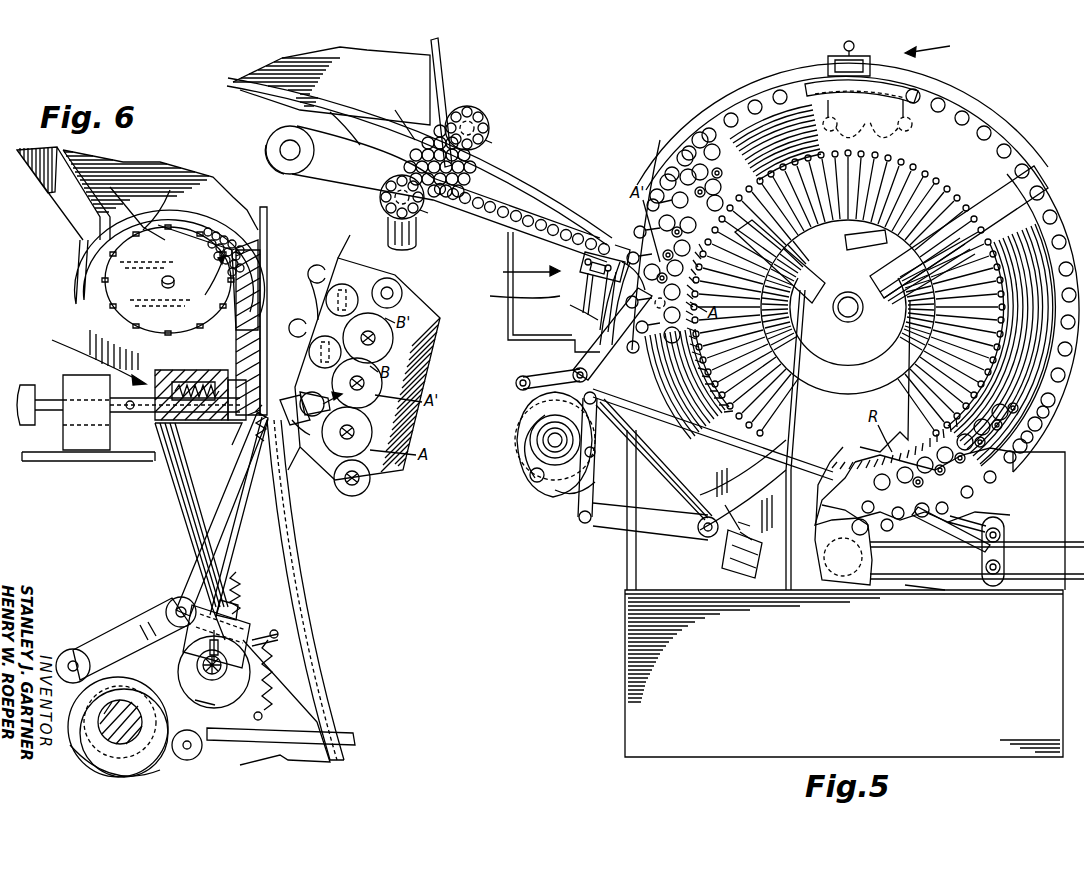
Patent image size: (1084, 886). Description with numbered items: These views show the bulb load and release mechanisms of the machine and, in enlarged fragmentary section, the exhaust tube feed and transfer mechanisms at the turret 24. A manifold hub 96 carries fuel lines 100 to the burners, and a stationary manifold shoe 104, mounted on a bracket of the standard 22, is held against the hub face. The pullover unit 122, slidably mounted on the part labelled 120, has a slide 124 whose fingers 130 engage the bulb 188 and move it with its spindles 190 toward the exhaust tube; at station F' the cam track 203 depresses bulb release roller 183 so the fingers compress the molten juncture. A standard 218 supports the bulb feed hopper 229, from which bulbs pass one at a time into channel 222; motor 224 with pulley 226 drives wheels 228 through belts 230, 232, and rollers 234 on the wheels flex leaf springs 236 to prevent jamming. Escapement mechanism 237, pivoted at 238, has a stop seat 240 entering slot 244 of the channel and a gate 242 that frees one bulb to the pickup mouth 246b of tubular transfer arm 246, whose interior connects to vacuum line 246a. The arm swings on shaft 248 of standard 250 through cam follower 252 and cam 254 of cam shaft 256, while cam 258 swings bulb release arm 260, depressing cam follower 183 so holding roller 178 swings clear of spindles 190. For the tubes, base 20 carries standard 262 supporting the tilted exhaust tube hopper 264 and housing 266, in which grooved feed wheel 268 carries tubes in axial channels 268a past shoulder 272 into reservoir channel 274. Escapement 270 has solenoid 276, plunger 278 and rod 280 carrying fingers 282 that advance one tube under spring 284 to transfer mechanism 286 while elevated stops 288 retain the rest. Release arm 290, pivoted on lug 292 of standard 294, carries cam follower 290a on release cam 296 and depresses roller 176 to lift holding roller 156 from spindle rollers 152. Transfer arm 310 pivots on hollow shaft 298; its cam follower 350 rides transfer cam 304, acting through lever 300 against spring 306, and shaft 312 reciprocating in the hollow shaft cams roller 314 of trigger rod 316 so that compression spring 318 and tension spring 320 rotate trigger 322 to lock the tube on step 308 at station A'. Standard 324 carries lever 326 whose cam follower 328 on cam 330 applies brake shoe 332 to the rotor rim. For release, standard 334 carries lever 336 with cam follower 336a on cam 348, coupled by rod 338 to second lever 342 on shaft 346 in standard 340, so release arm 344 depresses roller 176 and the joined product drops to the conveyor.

In FIG. 5, the base frame 20 is at (898, 665).
In FIG. 5, the turret wheel 22 is at (858, 360).
In FIG. 5, the frame plate 24 is at (758, 475).
In FIG. 5, the wheel shaft 96 is at (862, 312).
In FIG. 5, the radial paddle 100 is at (934, 181).
In FIG. 5, the radial paddle 104 is at (866, 252).
In FIG. 5, the outer ring 120 is at (1001, 139).
In FIG. 5, the rotation direction 122 is at (943, 47).
In FIG. 5, the bracket 124 is at (828, 66).
In FIG. 5, the hook 130 is at (844, 121).
In FIG. 6, the turret plate 152 is at (372, 480).
In FIG. 6, the slotted roller 156 is at (330, 288).
In FIG. 5, the roller 176 is at (918, 518).
In FIG. 6, the roller 176 is at (312, 278).
In FIG. 5, the ball 178 is at (700, 146).
In FIG. 5, the link 183 is at (619, 311).
In FIG. 5, the ball 188 is at (906, 130).
In FIG. 6, the ball 188 is at (410, 132).
In FIG. 5, the pusher 190 is at (678, 172).
In FIG. 5, the guide bracket 203 is at (905, 95).
In FIG. 6, the cylinder 218 is at (418, 238).
In FIG. 5, the bracket 222 is at (531, 292).
In FIG. 6, the pulley 224 is at (280, 138).
In FIG. 6, the pulley hub 226 is at (285, 150).
In FIG. 6, the sprocket 228 is at (490, 125).
In FIG. 6, the hopper 229 is at (390, 91).
In FIG. 6, the conveyor 230 is at (352, 186).
In FIG. 6, the plate 232 is at (448, 110).
In FIG. 6, the sprocket pin 234 is at (490, 140).
In FIG. 6, the guide 236 is at (370, 120).
In FIG. 5, the direction arrow 237 is at (511, 273).
In FIG. 5, the conveyor head 238 is at (572, 263).
In FIG. 5, the pin 240 is at (586, 258).
In FIG. 5, the pin 242 is at (606, 264).
In FIG. 5, the bracket arm 244 is at (511, 293).
In FIG. 5, the rod 246 is at (582, 312).
In FIG. 5, the rod end 246a is at (568, 305).
In FIG. 5, the rod end 246b is at (600, 290).
In FIG. 5, the lever 248 is at (572, 370).
In FIG. 5, the linkage 250 is at (644, 479).
In FIG. 5, the link 252 is at (640, 456).
In FIG. 5, the link 254 is at (650, 470).
In FIG. 5, the shaft 256 is at (548, 441).
In FIG. 5, the cam disc 258 is at (530, 410).
In FIG. 5, the arm 260 is at (525, 376).
In FIG. 6, the plate 262 is at (190, 572).
In FIG. 6, the chute 264 is at (213, 213).
In FIG. 6, the hopper housing 266 is at (78, 302).
In FIG. 6, the feed disc 268 is at (150, 276).
In FIG. 6, the disc notch 268a is at (182, 225).
In FIG. 6, the direction arrow 270 is at (84, 357).
In FIG. 6, the plate 272 is at (255, 282).
In FIG. 6, the plate 274 is at (255, 298).
In FIG. 6, the handle block 276 is at (96, 447).
In FIG. 6, the rod 278 is at (118, 410).
In FIG. 6, the pin 280 is at (140, 410).
In FIG. 6, the spring 282 is at (230, 400).
In FIG. 6, the housing 284 is at (155, 383).
In FIG. 6, the roller 286 is at (345, 492).
In FIG. 6, the block 288 is at (234, 420).
In FIG. 6, the lever 290 is at (196, 585).
In FIG. 6, the roller 290a is at (73, 650).
In FIG. 6, the pivot 292 is at (170, 604).
In FIG. 6, the bar 294 is at (298, 723).
In FIG. 6, the cam 296 is at (78, 738).
In FIG. 6, the pin 298 is at (205, 722).
In FIG. 6, the roller 300 is at (198, 742).
In FIG. 6, the cam rim 304 is at (162, 762).
In FIG. 6, the spring 306 is at (278, 668).
In FIG. 6, the latch 308 is at (296, 392).
In FIG. 6, the bar 310 is at (285, 548).
In FIG. 6, the gear 312 is at (205, 668).
In FIG. 6, the block 314 is at (207, 648).
In FIG. 6, the rod 316 is at (248, 492).
In FIG. 6, the spring 318 is at (255, 445).
In FIG. 6, the block 320 is at (286, 428).
In FIG. 6, the latch 322 is at (305, 390).
In FIG. 5, the spring block 324 is at (738, 575).
In FIG. 5, the link 326 is at (668, 528).
In FIG. 5, the pin 328 is at (530, 480).
In FIG. 5, the cam lobe 330 is at (530, 456).
In FIG. 5, the fork 332 is at (790, 506).
In FIG. 5, the frame 334 is at (618, 575).
In FIG. 5, the link 336 is at (580, 520).
In FIG. 5, the link end 336a is at (556, 490).
In FIG. 5, the guide bar 338 is at (722, 428).
In FIG. 5, the rail 340 is at (1008, 548).
In FIG. 5, the pin 342 is at (996, 530).
In FIG. 5, the arm 344 is at (975, 543).
In FIG. 5, the pin 346 is at (996, 576).
In FIG. 5, the hub 348 is at (540, 432).
In FIG. 5, the roller 350 is at (950, 580).
In FIG. 6, the roller 350 is at (190, 752).